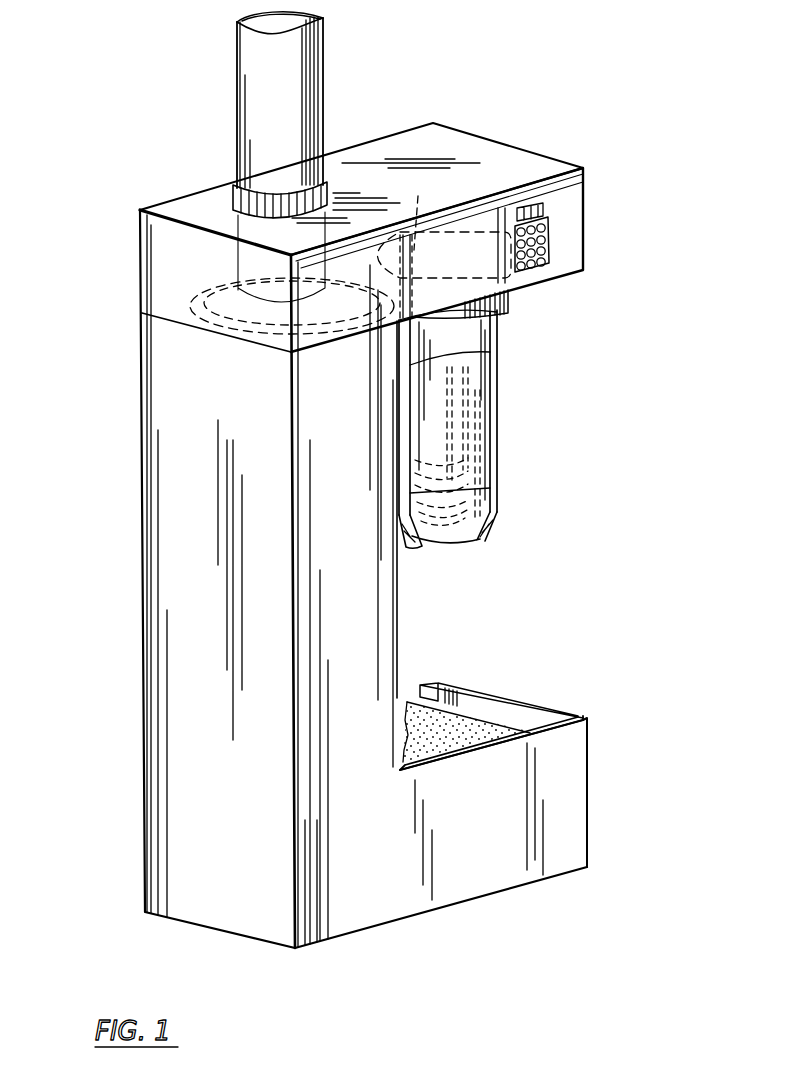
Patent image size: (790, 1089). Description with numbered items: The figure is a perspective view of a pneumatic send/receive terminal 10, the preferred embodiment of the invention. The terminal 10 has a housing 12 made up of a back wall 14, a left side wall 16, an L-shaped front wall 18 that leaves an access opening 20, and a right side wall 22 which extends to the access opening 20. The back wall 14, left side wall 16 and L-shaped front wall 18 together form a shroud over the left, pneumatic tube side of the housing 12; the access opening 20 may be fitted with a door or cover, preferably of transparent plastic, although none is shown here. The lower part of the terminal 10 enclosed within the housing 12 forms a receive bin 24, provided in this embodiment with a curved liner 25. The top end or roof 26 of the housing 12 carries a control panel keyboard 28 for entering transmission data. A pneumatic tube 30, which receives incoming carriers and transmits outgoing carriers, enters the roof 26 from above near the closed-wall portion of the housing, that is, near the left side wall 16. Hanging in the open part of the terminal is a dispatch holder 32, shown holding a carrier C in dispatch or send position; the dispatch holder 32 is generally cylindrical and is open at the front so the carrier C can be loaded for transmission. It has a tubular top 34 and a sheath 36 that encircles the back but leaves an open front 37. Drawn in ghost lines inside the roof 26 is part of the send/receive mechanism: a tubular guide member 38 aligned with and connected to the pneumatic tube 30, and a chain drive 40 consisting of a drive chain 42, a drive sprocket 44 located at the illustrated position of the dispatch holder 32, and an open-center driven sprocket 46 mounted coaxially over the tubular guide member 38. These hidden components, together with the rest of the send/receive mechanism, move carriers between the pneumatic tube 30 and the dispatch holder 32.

The pneumatic send/receive terminal 10 is at (74, 602).
The housing 12 is at (130, 745).
The back wall 14 is at (432, 656).
The left side wall 16 is at (155, 487).
The L-shaped front wall 18 is at (383, 918).
The access opening 20 is at (578, 288).
The right side wall 22 is at (537, 720).
The receive bin 24 is at (450, 743).
The curved liner 25 is at (465, 723).
The roof 26 is at (157, 250).
The control panel keyboard 28 is at (547, 230).
The pneumatic tube 30 is at (327, 83).
The dispatch holder 32 is at (497, 405).
The tubular top 34 is at (508, 297).
The sheath 36 is at (490, 352).
The open front 37 is at (494, 512).
The tubular guide member 38 is at (247, 260).
The chain drive 40 is at (417, 273).
The drive chain 42 is at (398, 278).
The drive sprocket 44 is at (419, 212).
The open-center driven sprocket 46 is at (210, 322).
The carrier C is at (482, 444).